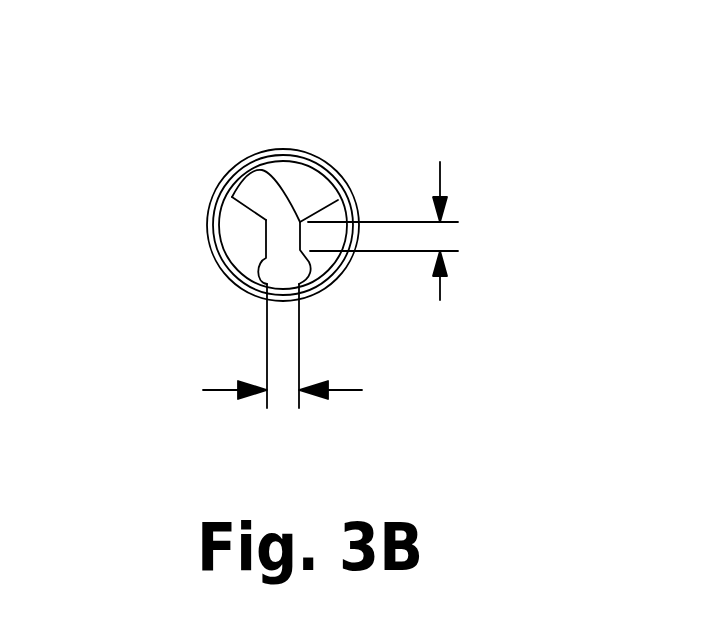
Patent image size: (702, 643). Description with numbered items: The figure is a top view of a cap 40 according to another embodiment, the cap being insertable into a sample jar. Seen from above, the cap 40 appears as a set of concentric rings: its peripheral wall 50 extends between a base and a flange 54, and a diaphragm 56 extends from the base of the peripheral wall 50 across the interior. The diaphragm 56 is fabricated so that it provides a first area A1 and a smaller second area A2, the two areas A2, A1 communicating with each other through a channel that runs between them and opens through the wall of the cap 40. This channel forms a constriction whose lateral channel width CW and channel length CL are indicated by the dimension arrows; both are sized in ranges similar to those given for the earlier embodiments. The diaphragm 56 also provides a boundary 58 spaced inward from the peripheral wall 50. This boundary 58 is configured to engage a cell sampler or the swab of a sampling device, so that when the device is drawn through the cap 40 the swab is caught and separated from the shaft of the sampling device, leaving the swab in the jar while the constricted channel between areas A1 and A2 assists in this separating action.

The cap 40 is at (410, 88).
The peripheral wall 50 is at (240, 263).
The flange 54 is at (246, 275).
The diaphragm 56 is at (222, 211).
The boundary 58 is at (259, 160).
The first area A1 is at (287, 180).
The second area A2 is at (323, 296).
The channel length CL is at (440, 162).
The channel width CW is at (348, 390).